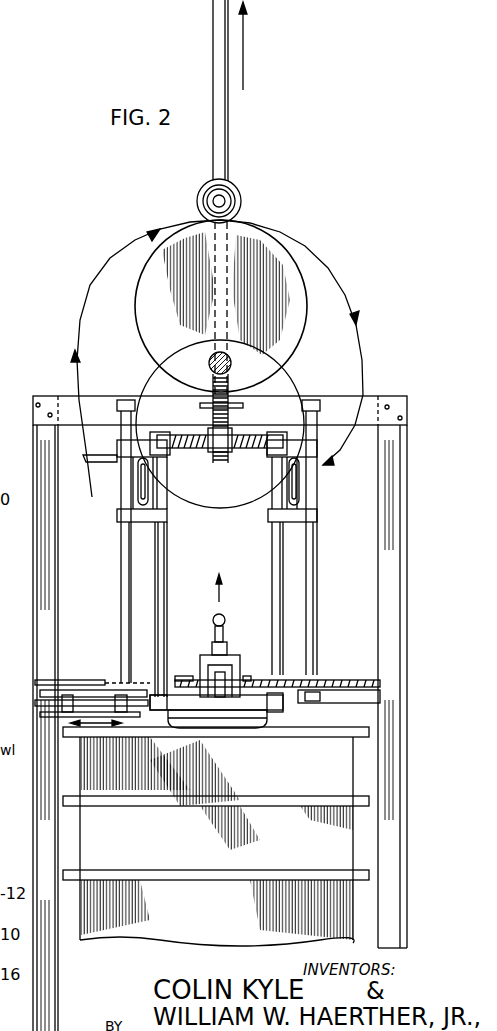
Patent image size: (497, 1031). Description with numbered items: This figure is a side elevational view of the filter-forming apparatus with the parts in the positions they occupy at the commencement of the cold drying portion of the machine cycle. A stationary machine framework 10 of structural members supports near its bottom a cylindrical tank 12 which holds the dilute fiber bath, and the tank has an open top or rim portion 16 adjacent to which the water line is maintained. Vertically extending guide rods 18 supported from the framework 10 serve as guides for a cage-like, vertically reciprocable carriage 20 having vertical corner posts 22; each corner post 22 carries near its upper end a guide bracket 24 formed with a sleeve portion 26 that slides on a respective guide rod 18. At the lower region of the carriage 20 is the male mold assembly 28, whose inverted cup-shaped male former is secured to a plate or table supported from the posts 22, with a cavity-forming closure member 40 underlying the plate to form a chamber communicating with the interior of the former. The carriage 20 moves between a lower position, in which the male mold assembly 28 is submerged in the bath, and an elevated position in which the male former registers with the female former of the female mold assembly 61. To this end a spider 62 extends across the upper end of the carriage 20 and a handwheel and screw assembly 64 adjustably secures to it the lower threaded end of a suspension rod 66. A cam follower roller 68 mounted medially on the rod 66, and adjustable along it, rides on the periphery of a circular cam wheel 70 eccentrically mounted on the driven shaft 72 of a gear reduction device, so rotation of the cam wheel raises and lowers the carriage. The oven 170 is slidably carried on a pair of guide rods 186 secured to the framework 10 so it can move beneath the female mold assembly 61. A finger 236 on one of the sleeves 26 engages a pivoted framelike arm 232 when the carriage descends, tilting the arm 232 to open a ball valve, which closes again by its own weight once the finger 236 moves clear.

The machine framework 10 is at (396, 513).
The tank 12 is at (343, 852).
The rim portion 16 is at (329, 731).
The guide rods 18 is at (121, 607).
The carriage 20 is at (170, 556).
The vertical corner posts 22 is at (167, 596).
The guide bracket 24 is at (296, 492).
The sleeve portion 26 is at (120, 522).
The male mold assembly 28 is at (219, 694).
The cavity-forming closure member 40 is at (265, 724).
The female mold assembly 61 is at (197, 658).
The spider 62 is at (192, 447).
The handwheel and screw assembly 64 is at (240, 449).
The suspension rod 66 is at (224, 157).
The cam follower roller 68 is at (238, 192).
The cam wheel 70 is at (258, 227).
The driven shaft 72 is at (209, 364).
The oven 170 is at (84, 697).
The guide rods 186 is at (100, 703).
The framelike structure 232 is at (103, 457).
The finger 236 is at (137, 440).